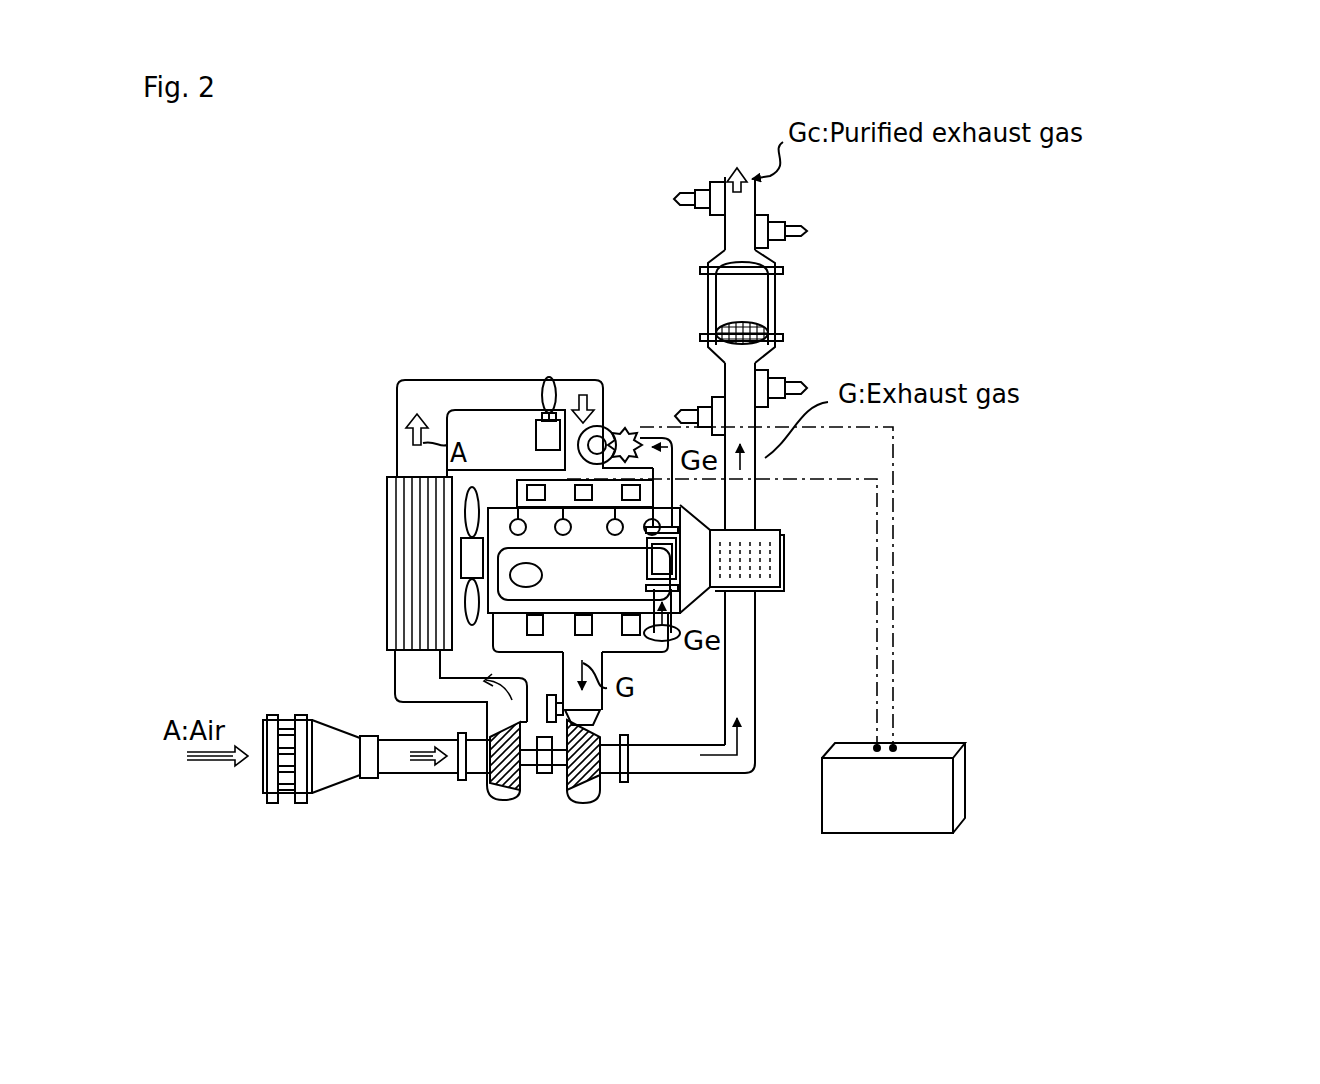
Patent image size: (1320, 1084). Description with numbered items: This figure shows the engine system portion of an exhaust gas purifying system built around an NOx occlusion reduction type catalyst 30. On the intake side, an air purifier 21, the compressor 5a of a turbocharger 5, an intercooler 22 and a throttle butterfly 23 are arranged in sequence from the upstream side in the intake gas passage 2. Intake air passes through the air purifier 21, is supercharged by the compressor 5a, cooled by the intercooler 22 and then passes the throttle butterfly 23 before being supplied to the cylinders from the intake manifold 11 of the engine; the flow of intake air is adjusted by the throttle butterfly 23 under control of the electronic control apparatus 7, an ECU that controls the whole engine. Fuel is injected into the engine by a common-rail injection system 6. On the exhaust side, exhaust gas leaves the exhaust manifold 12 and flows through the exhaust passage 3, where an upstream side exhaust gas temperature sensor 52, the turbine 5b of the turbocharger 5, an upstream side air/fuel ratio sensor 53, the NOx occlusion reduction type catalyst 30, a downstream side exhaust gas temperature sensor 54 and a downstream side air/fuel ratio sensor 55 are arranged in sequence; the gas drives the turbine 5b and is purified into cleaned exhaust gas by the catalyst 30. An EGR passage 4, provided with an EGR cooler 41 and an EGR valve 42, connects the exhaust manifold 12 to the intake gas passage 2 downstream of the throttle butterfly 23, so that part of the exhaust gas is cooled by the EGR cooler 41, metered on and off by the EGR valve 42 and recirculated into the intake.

The intake gas passage 2 is at (578, 385).
The exhaust passage 3 is at (743, 495).
The EGR passage 4 is at (667, 493).
The turbocharger 5 is at (545, 800).
The compressor 5a is at (505, 795).
The turbine 5b is at (590, 797).
The common-rail injection system 6 is at (522, 503).
The electronic control apparatus 7 is at (928, 770).
The intake manifold 11 is at (517, 476).
The exhaust manifold 12 is at (512, 640).
The air purifier 21 is at (338, 775).
The intercooler 22 is at (407, 603).
The throttle butterfly 23 is at (537, 421).
The NOx occlusion reduction type catalyst 30 is at (762, 307).
The EGR cooler 41 is at (660, 562).
The EGR valve 42 is at (633, 428).
The upstream side exhaust gas temperature sensor 52 is at (690, 408).
The upstream side air/fuel ratio sensor 53 is at (800, 390).
The downstream side exhaust gas temperature sensor 54 is at (795, 230).
The downstream side air/fuel ratio sensor 55 is at (700, 192).